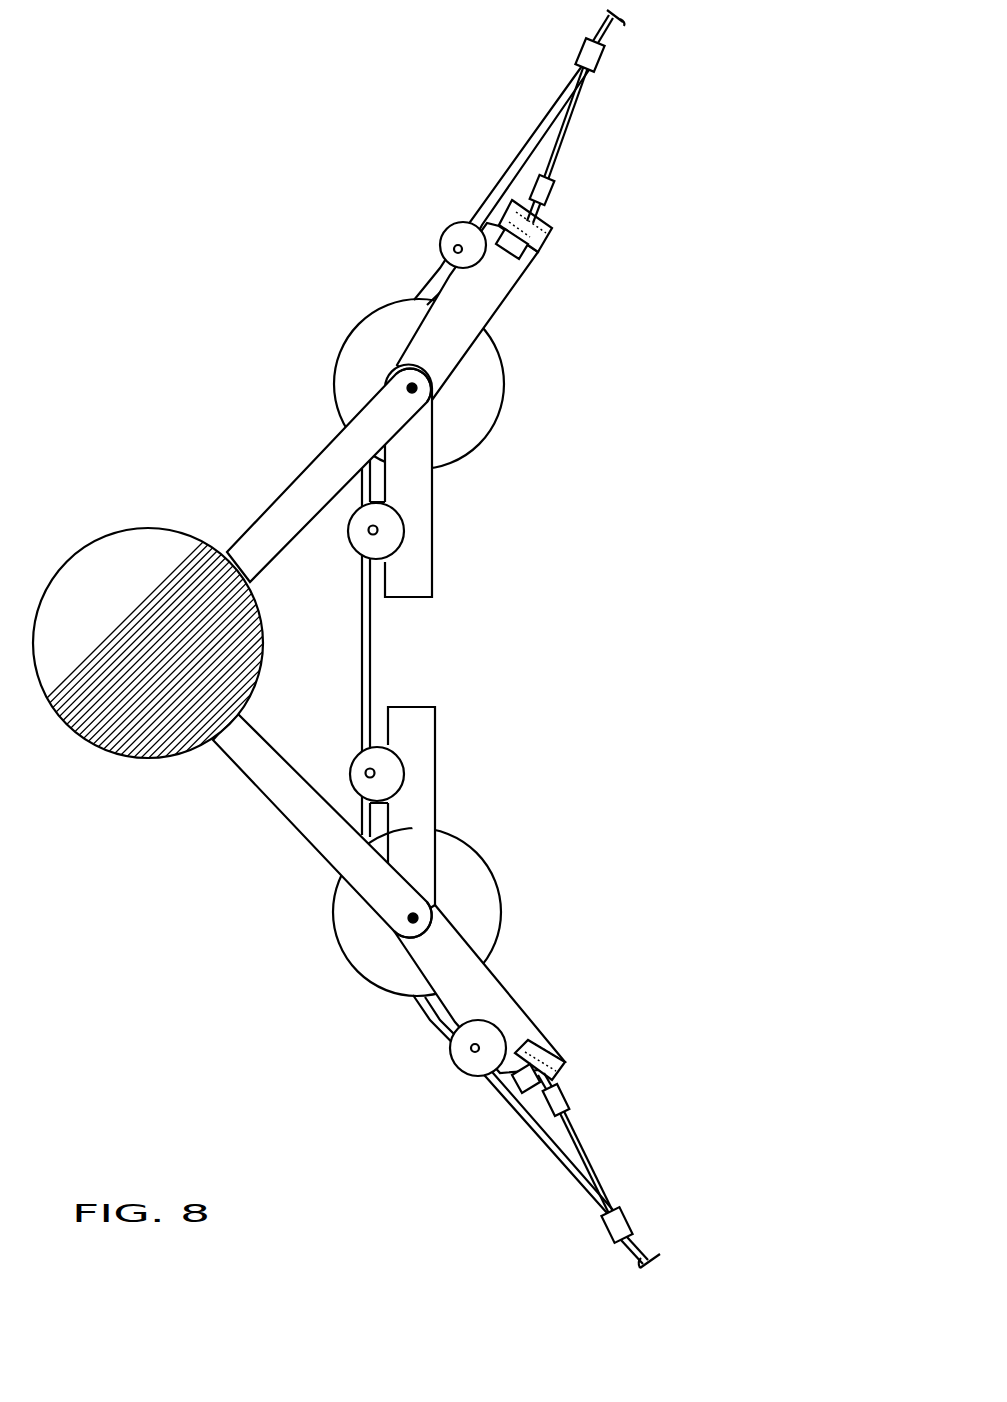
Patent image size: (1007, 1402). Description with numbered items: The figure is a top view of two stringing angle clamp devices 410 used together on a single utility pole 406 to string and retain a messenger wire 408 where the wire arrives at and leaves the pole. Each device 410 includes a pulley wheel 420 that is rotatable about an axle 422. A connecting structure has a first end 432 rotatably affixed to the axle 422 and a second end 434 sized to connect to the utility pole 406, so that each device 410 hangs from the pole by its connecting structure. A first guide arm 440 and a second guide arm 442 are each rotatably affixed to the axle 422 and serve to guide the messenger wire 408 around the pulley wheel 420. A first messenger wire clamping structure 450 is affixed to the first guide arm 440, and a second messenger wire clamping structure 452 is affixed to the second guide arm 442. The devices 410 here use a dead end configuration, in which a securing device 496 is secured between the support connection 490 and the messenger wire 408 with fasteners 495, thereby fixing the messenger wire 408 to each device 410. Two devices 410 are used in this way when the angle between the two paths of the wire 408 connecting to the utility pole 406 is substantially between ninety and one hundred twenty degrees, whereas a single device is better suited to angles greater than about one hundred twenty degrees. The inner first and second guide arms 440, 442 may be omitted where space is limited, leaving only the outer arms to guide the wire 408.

The utility pole 406 is at (145, 543).
The messenger wire 408 is at (535, 127).
The stringing angle clamp device 410 is at (215, 349).
The pulley wheel 420 is at (373, 328).
The axle 422 is at (412, 388).
The first end 432 is at (393, 395).
The second end 434 is at (243, 562).
The first guide arm 440 is at (488, 298).
The second guide arm 442 is at (417, 533).
The first messenger wire clamping structure 450 is at (470, 233).
The second messenger wire clamping structure 452 is at (368, 552).
The support connection 490 is at (530, 247).
The fasteners 495 is at (597, 58).
The securing device 496 is at (573, 115).